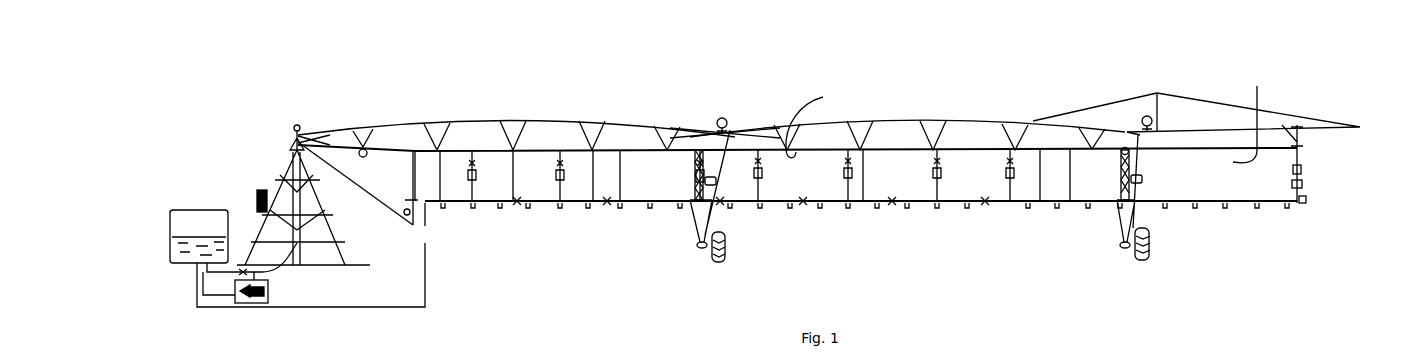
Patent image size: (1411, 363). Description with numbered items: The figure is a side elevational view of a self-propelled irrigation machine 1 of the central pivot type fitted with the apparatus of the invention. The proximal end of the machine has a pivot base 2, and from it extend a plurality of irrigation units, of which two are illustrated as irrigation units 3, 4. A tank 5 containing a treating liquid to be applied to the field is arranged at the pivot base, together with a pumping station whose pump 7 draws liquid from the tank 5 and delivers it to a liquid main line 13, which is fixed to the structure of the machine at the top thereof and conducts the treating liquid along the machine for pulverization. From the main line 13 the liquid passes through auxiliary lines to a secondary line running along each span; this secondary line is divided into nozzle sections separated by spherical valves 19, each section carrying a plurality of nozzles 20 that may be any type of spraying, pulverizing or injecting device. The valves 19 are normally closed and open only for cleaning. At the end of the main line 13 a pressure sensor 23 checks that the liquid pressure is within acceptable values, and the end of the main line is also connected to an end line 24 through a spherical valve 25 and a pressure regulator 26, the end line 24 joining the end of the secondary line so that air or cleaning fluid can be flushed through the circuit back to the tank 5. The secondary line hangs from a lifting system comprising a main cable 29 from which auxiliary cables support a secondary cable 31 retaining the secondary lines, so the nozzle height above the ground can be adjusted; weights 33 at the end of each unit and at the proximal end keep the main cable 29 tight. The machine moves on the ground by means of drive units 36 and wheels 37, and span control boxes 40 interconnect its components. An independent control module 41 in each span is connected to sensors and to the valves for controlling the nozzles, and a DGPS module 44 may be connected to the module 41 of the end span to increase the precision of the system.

The self-propelled irrigation machine 1 is at (535, 82).
The pivot base 2 is at (260, 168).
The irrigation unit 3 is at (410, 120).
The irrigation unit 4 is at (907, 120).
The tank 5 is at (162, 221).
The pump 7 is at (314, 255).
The liquid main line 13 is at (301, 266).
The spherical valve 19 is at (723, 206).
The nozzles 20 is at (500, 208).
The pressure sensor 23 is at (1131, 152).
The end line 24 is at (1301, 137).
The spherical valve 25 is at (1301, 173).
The pressure regulator 26 is at (1305, 186).
The main cable 29 is at (1029, 115).
The secondary cable 31 is at (1043, 198).
The weights 33 is at (1306, 205).
The drive units 36 is at (696, 248).
The wheels 37 is at (727, 260).
The span control boxes 40 is at (723, 115).
The independent control module 41 is at (716, 181).
The DGPS module 44 is at (1137, 203).